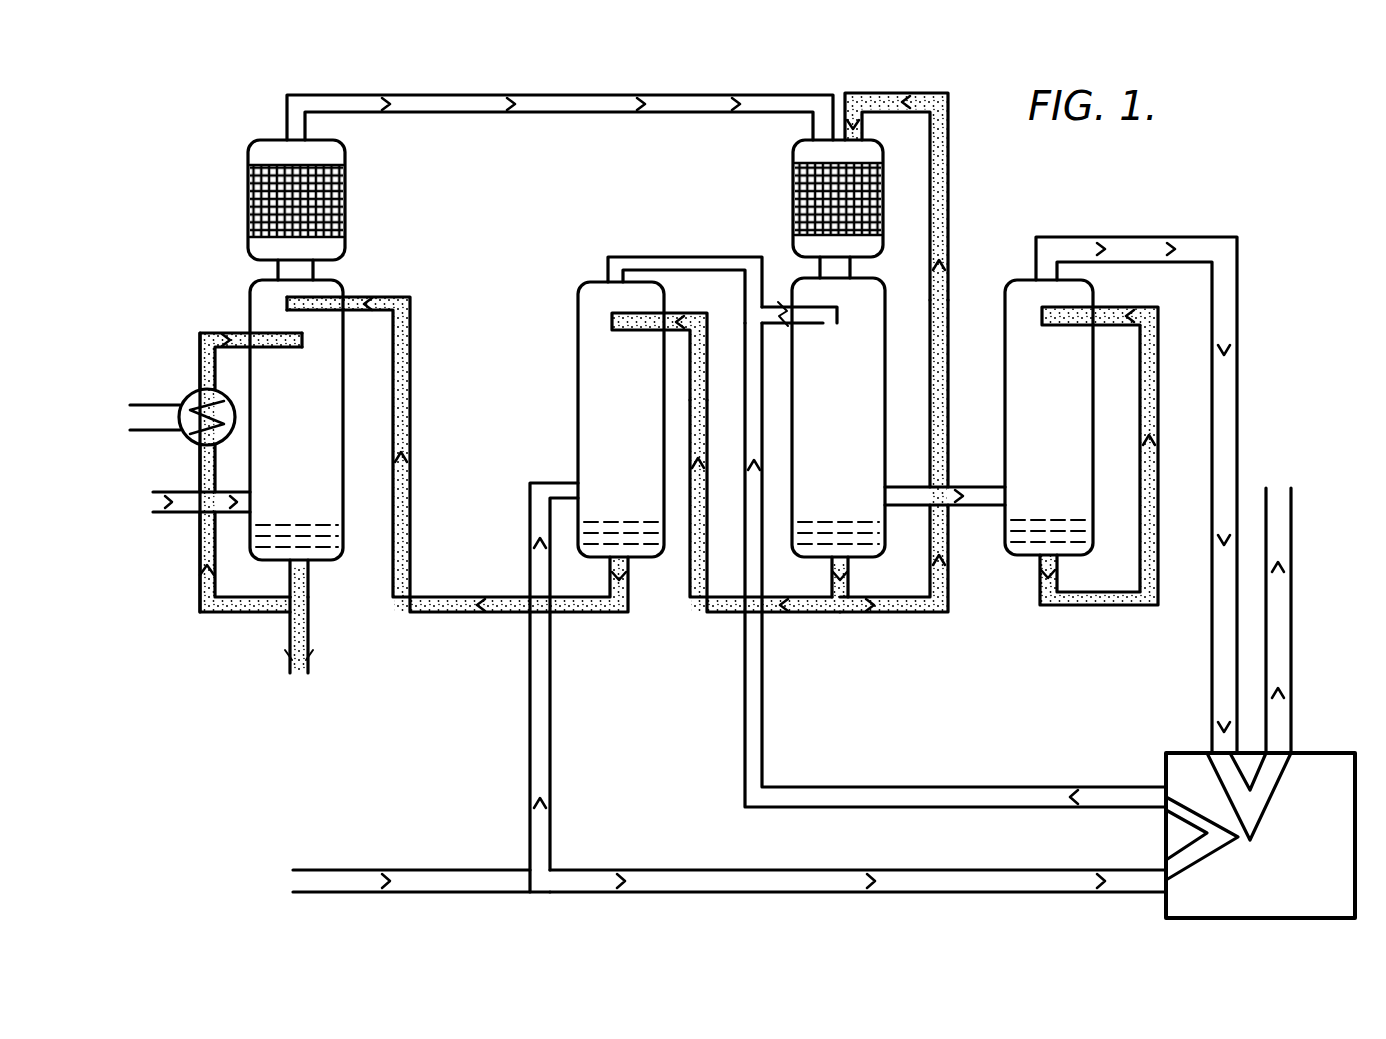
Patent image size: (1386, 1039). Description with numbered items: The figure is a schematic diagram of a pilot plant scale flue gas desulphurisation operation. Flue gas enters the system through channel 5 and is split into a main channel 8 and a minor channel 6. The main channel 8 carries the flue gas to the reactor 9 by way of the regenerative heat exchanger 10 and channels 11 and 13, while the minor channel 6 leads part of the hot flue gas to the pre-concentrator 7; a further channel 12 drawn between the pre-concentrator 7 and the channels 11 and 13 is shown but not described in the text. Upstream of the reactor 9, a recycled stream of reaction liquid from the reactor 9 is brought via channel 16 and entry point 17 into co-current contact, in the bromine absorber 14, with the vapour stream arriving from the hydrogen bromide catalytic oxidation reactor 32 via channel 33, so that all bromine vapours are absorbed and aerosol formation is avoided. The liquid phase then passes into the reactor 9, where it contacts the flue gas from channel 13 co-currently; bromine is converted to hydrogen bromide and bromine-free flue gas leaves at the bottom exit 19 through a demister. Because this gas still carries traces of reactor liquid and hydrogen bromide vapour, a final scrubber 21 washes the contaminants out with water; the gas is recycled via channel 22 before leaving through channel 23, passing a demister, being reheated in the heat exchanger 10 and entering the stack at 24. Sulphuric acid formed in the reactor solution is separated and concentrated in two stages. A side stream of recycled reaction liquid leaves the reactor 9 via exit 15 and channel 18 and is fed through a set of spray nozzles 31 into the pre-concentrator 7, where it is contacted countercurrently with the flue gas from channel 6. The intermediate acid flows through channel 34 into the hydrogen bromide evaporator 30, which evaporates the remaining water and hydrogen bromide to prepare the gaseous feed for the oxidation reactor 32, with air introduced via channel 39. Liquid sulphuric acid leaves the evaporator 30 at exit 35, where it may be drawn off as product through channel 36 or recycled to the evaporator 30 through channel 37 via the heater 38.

The channel 5 is at (408, 870).
The minor channel 6 is at (530, 740).
The pre-concentrator 7 is at (578, 413).
The main channel 8 is at (672, 870).
The reactor 9 is at (885, 332).
The regenerative heat exchanger 10 is at (1330, 756).
The channel 11 is at (765, 696).
The vapor transfer pipe 12 is at (700, 258).
The channel 13 is at (775, 304).
The bromine absorber 14 is at (793, 152).
The exit 15 is at (855, 562).
The channel 16 is at (890, 612).
The entry point 17 is at (864, 124).
The channel 18 is at (690, 607).
The bottom exit 19 is at (892, 482).
The final scrubber 21 is at (1005, 300).
The channel 22 is at (1079, 606).
The channel 23 is at (1143, 237).
The stack 24 is at (1291, 512).
The hydrogen bromide evaporator 30 is at (250, 300).
The spray nozzles 31 is at (578, 336).
The hydrogen bromide catalytic oxidation reactor 32 is at (248, 160).
The channel 33 is at (314, 95).
The channel 34 is at (410, 378).
The exit 35 is at (310, 568).
The channel 36 is at (308, 666).
The channel 37 is at (240, 612).
The heater 38 is at (190, 397).
The channel 39 is at (168, 512).